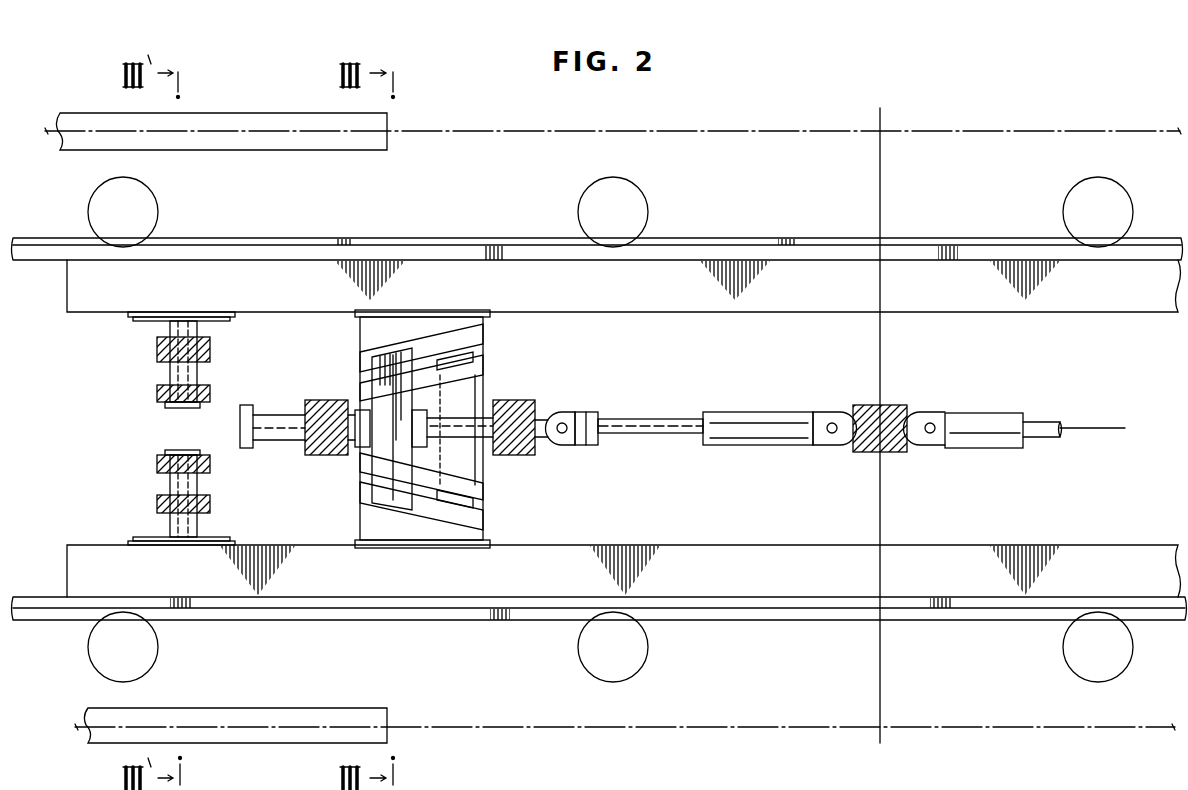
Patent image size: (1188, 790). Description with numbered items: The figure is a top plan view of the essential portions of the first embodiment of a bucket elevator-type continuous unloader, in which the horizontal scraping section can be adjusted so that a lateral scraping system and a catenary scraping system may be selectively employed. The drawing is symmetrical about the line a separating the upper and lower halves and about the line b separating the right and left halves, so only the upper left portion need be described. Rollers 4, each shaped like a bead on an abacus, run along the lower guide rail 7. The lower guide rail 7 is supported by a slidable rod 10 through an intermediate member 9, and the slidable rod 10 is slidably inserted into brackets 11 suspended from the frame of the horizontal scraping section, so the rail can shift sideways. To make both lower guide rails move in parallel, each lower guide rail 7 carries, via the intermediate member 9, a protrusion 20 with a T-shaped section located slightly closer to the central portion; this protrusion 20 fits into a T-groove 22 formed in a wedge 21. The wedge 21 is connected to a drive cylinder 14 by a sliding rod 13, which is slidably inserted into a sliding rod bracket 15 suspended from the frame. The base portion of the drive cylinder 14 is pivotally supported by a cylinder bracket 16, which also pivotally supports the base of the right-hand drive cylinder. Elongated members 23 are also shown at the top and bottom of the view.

The roller 4 is at (646, 204).
The lower guide rail 7 is at (808, 237).
The intermediate member 9 is at (666, 313).
The slidable rod 10 is at (170, 374).
The bracket 11 is at (157, 347).
The sliding rod 13 is at (546, 441).
The drive cylinder 14 is at (752, 446).
The sliding rod bracket 15 is at (312, 456).
The cylinder bracket 16 is at (870, 452).
The protrusion 20 is at (483, 328).
The wedge 21 is at (385, 462).
The T-groove 22 is at (483, 351).
The bar 23 is at (237, 118).
The line a is at (980, 428).
The line b is at (882, 122).